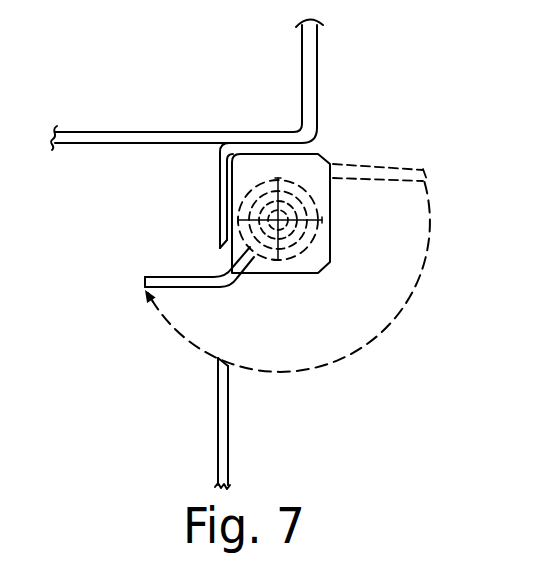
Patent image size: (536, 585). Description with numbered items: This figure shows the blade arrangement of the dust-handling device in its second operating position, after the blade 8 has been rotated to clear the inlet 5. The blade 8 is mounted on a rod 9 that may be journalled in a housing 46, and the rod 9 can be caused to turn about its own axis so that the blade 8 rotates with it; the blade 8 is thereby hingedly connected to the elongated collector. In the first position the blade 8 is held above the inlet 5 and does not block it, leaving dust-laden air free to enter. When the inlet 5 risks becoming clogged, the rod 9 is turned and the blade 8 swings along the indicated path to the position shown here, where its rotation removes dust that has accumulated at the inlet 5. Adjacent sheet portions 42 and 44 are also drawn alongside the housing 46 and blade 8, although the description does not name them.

The housing 46 is at (324, 158).
The clip strip 42 is at (220, 175).
The blade 8 is at (173, 276).
The rod 9 is at (284, 215).
The inlet 5 is at (220, 318).
The vertical strip 44 is at (217, 425).